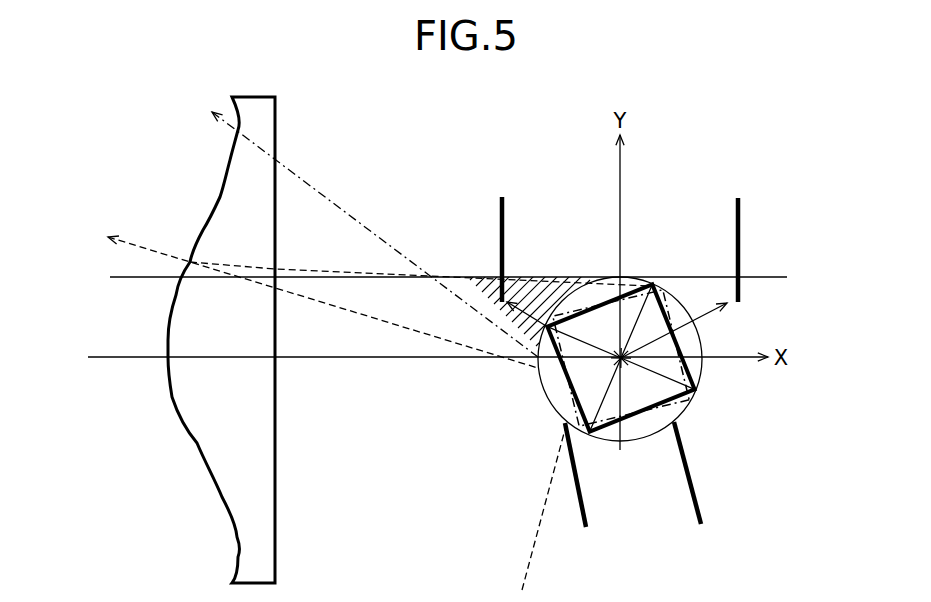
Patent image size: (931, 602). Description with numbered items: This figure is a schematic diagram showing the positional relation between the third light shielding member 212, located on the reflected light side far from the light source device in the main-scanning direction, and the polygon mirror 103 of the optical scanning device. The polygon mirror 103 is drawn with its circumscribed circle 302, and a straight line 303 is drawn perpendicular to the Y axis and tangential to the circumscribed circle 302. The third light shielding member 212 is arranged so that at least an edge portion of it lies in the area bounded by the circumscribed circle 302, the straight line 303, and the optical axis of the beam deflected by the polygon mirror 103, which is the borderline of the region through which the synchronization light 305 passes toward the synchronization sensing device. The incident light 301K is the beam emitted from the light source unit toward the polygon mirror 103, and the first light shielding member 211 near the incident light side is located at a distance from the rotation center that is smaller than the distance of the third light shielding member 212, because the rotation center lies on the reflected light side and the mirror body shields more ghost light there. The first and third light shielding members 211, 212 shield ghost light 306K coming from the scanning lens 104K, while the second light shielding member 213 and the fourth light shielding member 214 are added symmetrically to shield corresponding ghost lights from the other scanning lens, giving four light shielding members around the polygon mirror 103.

The scanning lens 104K is at (225, 207).
The synchronization light 305 is at (372, 213).
The ghost light 306K is at (298, 270).
The incident light 301K is at (532, 543).
The polygon mirror 103 is at (662, 300).
The circumscribed circle 302 is at (707, 370).
The straight line 303 is at (762, 277).
The third light shielding member 212 is at (506, 210).
The fourth light shielding member 214 is at (740, 200).
The first light shielding member 211 is at (587, 532).
The second light shielding member 213 is at (706, 518).